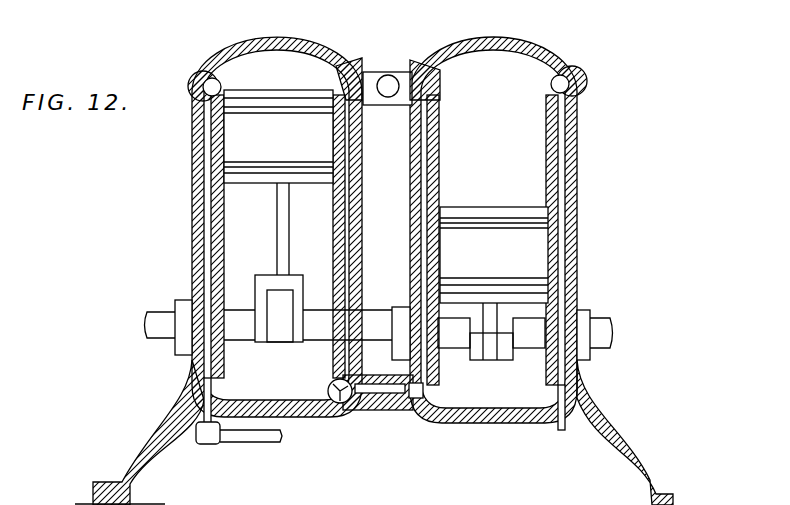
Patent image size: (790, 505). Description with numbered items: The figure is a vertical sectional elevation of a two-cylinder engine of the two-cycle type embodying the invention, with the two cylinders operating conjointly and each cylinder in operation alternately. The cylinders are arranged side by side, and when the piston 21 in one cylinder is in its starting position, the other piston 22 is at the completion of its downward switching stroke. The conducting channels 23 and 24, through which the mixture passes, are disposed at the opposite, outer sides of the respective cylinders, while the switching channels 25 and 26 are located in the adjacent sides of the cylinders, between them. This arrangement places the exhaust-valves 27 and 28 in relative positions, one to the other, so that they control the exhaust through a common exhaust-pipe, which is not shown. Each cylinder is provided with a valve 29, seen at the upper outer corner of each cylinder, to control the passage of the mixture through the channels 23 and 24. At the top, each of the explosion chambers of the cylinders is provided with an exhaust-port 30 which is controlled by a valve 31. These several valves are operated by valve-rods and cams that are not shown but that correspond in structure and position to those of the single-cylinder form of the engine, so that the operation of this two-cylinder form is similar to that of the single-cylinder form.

The piston 21 is at (278, 216).
The piston 22 is at (493, 283).
The conducting channel 23 is at (208, 230).
The conducting channel 24 is at (563, 226).
The switching channel 25 is at (347, 183).
The switching channel 26 is at (425, 222).
The exhaust-valve 27 is at (345, 403).
The exhaust-valve 28 is at (423, 410).
The valve 29 is at (588, 50).
The exhaust-port 30 is at (387, 80).
The valve 31 is at (438, 35).